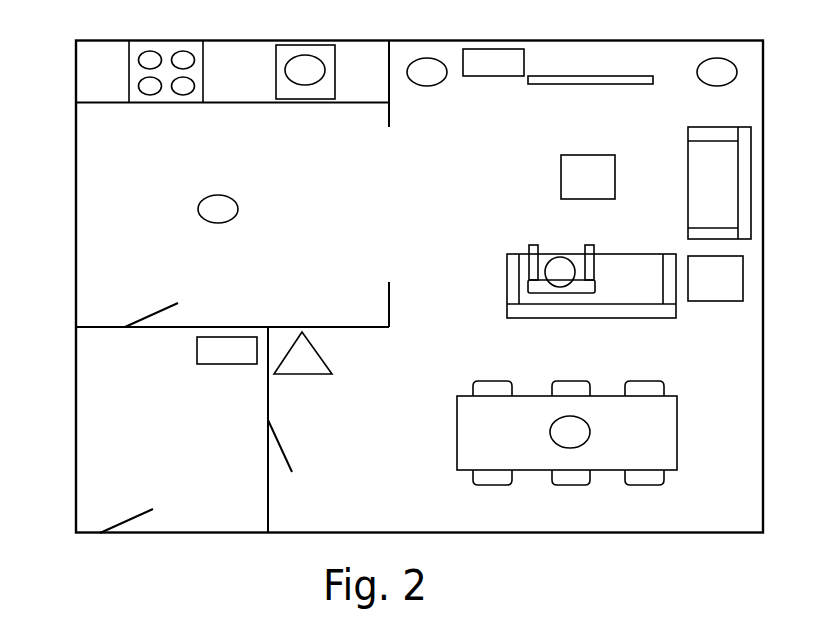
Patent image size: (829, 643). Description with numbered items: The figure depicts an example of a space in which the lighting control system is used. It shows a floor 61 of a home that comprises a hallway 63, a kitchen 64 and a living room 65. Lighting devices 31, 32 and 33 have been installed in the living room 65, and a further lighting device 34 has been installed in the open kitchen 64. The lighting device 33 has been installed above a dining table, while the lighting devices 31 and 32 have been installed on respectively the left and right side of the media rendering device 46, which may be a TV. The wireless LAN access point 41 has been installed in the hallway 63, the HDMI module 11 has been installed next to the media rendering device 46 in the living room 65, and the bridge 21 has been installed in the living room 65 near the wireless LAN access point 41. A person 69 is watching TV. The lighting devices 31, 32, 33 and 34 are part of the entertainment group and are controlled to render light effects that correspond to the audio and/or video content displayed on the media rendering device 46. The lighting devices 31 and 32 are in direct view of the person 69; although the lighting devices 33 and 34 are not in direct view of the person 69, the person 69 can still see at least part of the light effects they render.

The floor 61 is at (76, 122).
The media rendering device 46 is at (594, 76).
The lighting device 31 is at (427, 72).
The HDMI module 11 is at (493, 62).
The lighting device 32 is at (717, 72).
The lighting device 34 is at (218, 209).
The lighting device 33 is at (567, 433).
The wireless LAN access point 41 is at (227, 350).
The bridge 21 is at (303, 354).
The hallway 63 is at (129, 328).
The kitchen 64 is at (370, 221).
The living room 65 is at (200, 476).
The person 69 is at (541, 293).